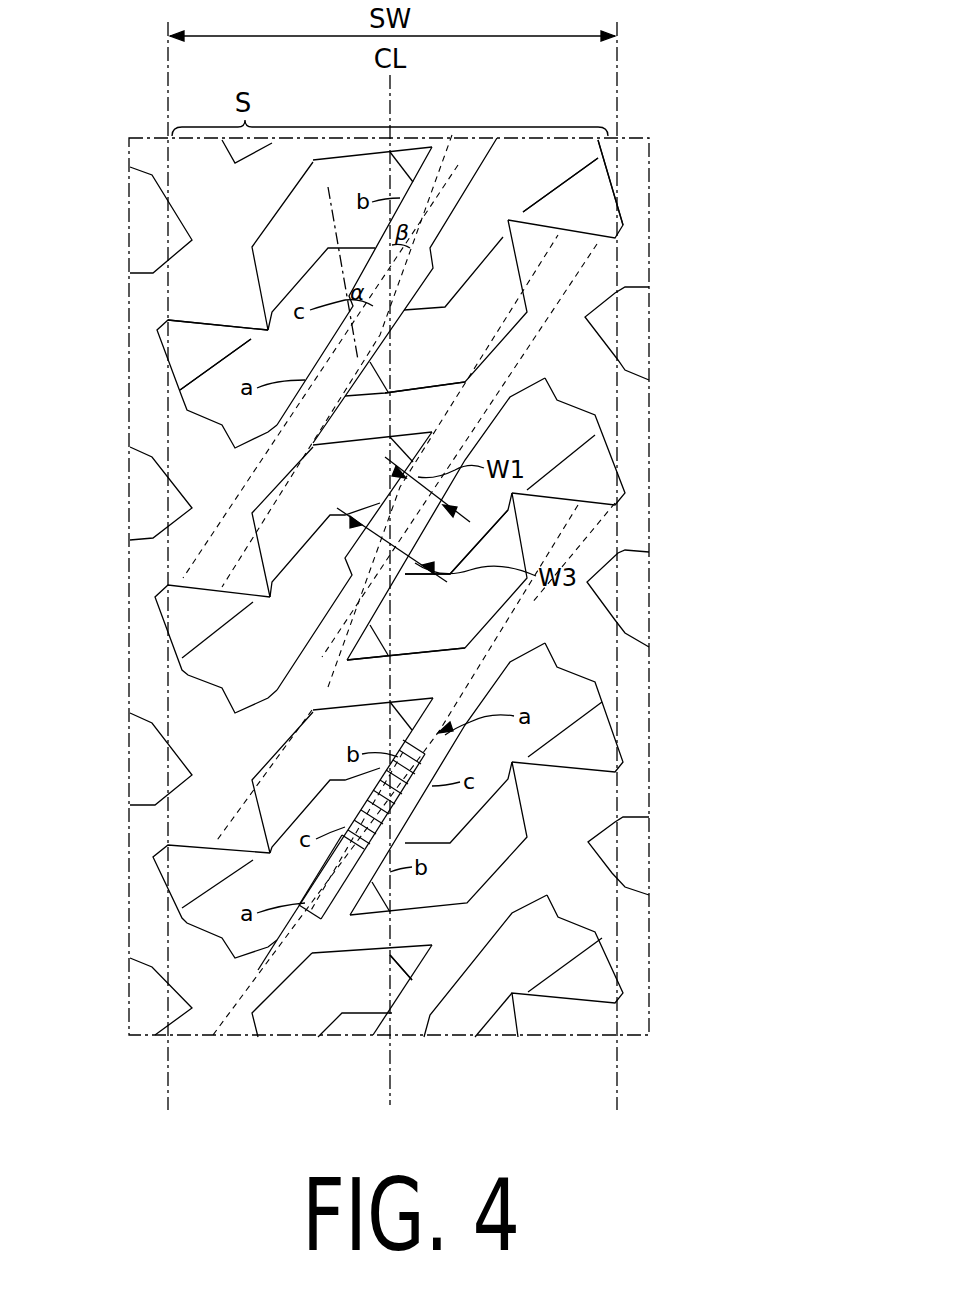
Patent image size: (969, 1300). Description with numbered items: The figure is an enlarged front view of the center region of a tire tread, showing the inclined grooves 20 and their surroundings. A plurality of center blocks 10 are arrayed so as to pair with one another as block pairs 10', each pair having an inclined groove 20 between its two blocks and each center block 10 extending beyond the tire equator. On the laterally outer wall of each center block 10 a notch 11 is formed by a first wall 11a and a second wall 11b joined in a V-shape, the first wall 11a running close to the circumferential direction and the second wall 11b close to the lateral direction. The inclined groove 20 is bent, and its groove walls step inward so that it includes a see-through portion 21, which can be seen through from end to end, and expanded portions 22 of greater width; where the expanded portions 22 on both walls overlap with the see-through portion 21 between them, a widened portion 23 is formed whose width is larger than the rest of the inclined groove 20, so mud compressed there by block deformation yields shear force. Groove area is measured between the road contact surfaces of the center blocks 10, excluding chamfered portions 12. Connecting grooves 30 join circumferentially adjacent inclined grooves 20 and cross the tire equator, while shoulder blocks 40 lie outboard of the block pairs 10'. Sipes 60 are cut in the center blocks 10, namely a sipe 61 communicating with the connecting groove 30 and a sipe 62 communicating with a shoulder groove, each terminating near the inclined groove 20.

The center block 10 is at (389, 562).
The block pair 10' is at (475, 67).
The notch 11 is at (544, 523).
The first wall 11a is at (258, 283).
The second wall 11b is at (208, 312).
The chamfered portion 12 is at (398, 968).
The inclined groove 20 is at (445, 738).
The see-through portion 21 is at (265, 1027).
The expanded portion 22 is at (372, 903).
The widened portion 23 is at (440, 578).
The connecting groove 30 is at (378, 418).
The shoulder block 40 is at (637, 333).
The sipe 60 is at (625, 206).
The sipe 61 is at (482, 270).
The sipe 62 is at (565, 183).